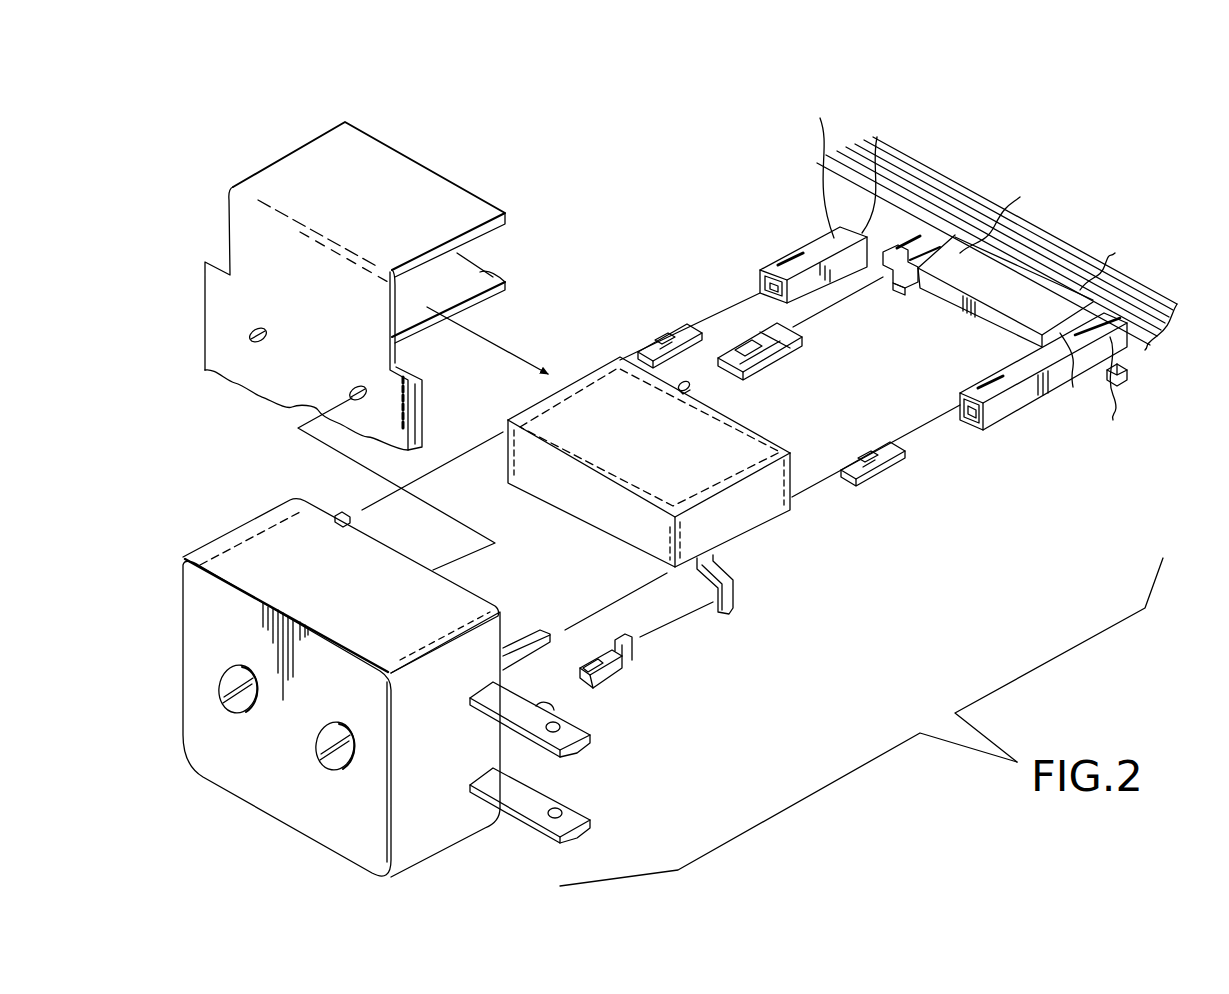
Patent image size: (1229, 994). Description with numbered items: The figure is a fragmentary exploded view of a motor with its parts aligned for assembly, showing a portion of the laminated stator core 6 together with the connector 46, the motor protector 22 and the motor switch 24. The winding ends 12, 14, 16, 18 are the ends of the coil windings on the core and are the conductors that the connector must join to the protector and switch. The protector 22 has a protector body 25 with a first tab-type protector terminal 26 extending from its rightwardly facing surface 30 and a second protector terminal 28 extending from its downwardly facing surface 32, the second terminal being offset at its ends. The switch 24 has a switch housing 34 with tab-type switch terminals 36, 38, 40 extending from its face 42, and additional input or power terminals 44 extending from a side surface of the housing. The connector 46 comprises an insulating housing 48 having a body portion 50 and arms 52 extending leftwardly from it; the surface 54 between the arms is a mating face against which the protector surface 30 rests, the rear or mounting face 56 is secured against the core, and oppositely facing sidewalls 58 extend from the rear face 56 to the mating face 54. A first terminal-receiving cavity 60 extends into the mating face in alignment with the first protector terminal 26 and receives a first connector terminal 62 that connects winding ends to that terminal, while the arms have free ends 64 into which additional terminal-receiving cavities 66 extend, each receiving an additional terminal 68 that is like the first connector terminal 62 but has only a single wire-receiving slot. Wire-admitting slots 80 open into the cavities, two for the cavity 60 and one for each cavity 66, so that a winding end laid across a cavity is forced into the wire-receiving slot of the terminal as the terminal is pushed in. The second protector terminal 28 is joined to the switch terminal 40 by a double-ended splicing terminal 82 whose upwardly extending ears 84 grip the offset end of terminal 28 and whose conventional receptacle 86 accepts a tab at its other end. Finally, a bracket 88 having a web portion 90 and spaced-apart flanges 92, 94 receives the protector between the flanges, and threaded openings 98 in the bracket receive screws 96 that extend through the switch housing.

The stator core 6 is at (965, 290).
The winding end 12 is at (978, 269).
The winding end 14 is at (1017, 200).
The winding end 16 is at (823, 143).
The winding end 18 is at (1158, 327).
The protector 22 is at (674, 465).
The switch 24 is at (394, 667).
The protector body 25 is at (738, 468).
The first protector terminal 26 is at (681, 392).
The second protector terminal 28 is at (717, 553).
The surface 30 is at (750, 428).
The downwardly-facing surface 32 is at (592, 526).
The switch housing 34 is at (188, 568).
The switch terminal 36 is at (337, 517).
The switch terminal 38 is at (525, 627).
The switch terminal 40 is at (556, 707).
The face 42 is at (403, 562).
The input or power terminals 44 is at (585, 830).
The connector 46 is at (1052, 421).
The housing 48 is at (1112, 386).
The body portion 50 is at (1073, 388).
The arms 52 is at (800, 243).
The mating face 54 is at (985, 318).
The rear face 56 is at (1112, 260).
The sidewalls 58 is at (988, 190).
The first terminal-receiving cavity 60 is at (913, 288).
The first connector terminal 62 is at (786, 363).
The free ends 64 is at (978, 431).
The additional terminal-receiving cavities 66 is at (958, 404).
The additional terminal 68 is at (650, 333).
The wire-admitting slots 80 is at (773, 262).
The double-ended splicing terminal 82 is at (643, 660).
The ears 84 is at (640, 647).
The receptacle 86 is at (592, 659).
The bracket 88 is at (380, 286).
The web portion 90 is at (222, 373).
The flange 92 is at (488, 203).
The flange 94 is at (492, 275).
The screws 96 is at (336, 770).
The threaded openings 98 is at (268, 330).